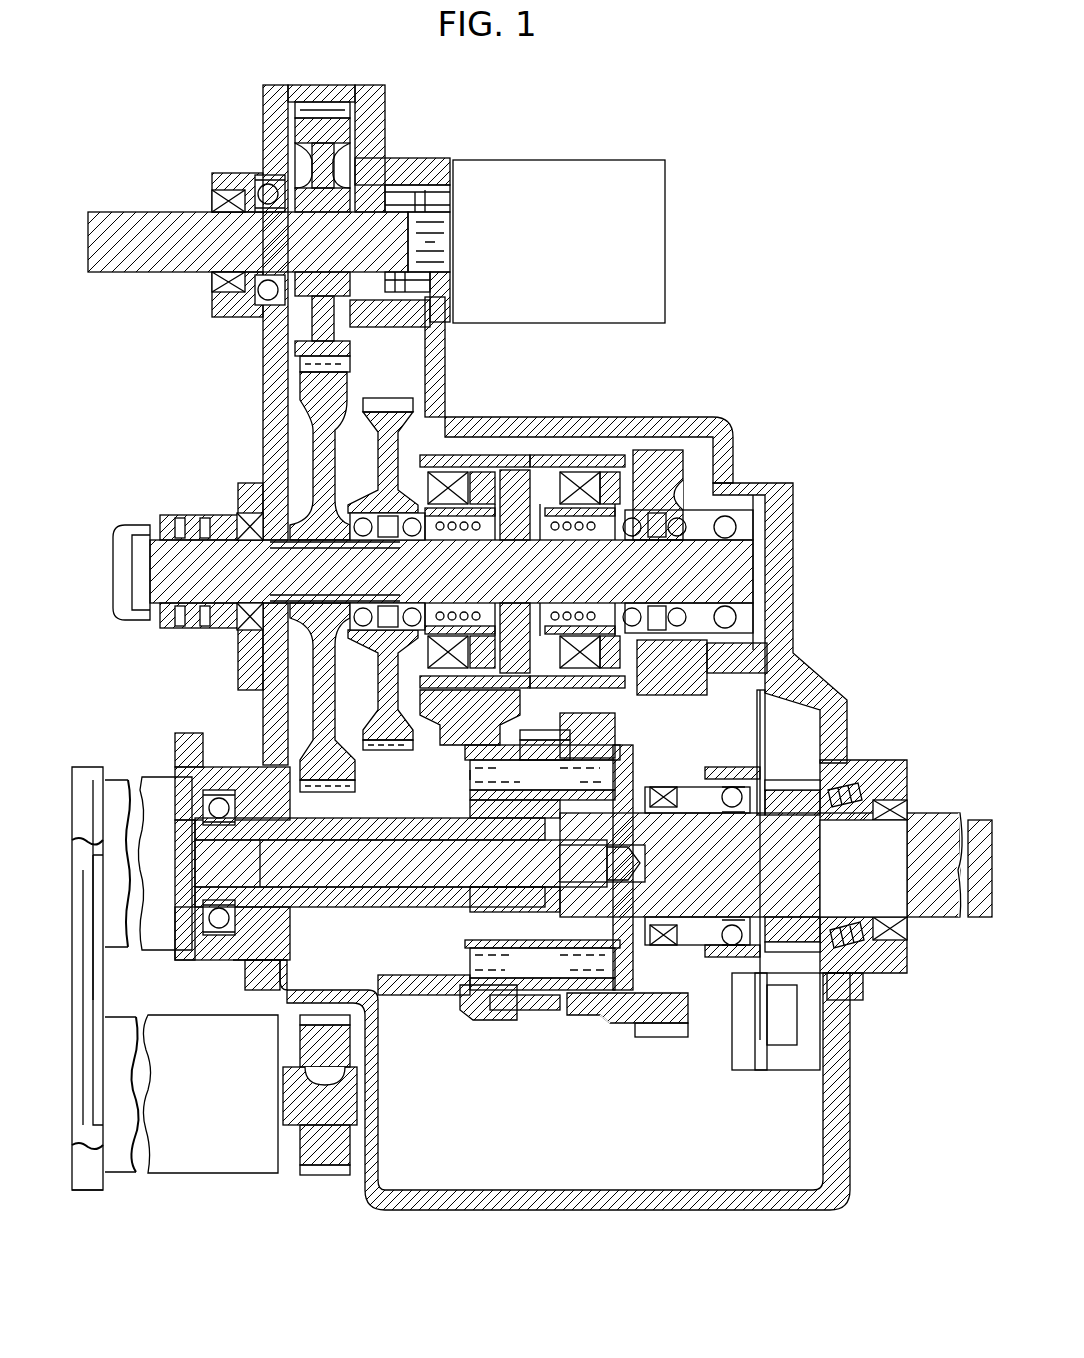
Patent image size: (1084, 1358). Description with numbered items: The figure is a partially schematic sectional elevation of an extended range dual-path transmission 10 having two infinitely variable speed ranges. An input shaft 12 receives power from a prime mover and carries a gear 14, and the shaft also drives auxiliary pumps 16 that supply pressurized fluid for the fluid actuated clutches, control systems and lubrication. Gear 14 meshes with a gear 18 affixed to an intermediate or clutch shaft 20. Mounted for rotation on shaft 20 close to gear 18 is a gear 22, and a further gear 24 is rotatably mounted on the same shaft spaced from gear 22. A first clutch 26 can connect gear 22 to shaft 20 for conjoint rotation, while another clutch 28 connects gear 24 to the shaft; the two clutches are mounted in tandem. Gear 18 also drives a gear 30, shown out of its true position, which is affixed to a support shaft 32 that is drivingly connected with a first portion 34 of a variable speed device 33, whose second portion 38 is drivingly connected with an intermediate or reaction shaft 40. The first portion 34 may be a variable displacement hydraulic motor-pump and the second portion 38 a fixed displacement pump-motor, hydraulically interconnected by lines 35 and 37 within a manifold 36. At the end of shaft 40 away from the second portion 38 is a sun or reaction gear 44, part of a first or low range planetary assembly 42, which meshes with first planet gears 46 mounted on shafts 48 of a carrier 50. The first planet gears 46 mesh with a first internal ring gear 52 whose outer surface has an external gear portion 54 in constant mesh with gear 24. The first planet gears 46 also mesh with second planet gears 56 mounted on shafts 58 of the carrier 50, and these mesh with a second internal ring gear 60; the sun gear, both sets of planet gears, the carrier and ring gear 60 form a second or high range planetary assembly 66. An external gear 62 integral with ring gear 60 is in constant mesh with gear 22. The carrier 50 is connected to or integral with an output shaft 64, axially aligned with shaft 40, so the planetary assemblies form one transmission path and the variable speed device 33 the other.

The dual-path transmission 10 is at (520, 115).
The input shaft 12 is at (175, 262).
The gear 14 is at (340, 120).
The auxiliary pumps 16 is at (630, 175).
The gear 18 is at (300, 378).
The intermediate or clutch shaft 20 is at (178, 545).
The gear 22 is at (388, 400).
The gear 24 is at (665, 462).
The first clutch 26 is at (455, 462).
The clutch 28 is at (575, 462).
The gear 30 is at (325, 1172).
The support shaft 32 is at (300, 1095).
The variable speed device 33 is at (85, 760).
The first portion 34 is at (208, 1160).
The line 35 is at (100, 993).
The manifold 36 is at (90, 1185).
The line 37 is at (95, 900).
The second portion 38 is at (158, 780).
The intermediate or reaction shaft 40 is at (355, 878).
The first or low range planetary assembly 42 is at (595, 1020).
The sun or reaction gear 44 is at (525, 888).
The first planet gears 46 is at (545, 732).
The shafts 48 is at (552, 786).
The carrier 50 is at (520, 774).
The first internal ring gear 52 is at (588, 732).
The external gear portion 54 is at (665, 1032).
The second planet gears 56 is at (548, 1005).
The shafts 58 is at (512, 962).
The second internal ring gear 60 is at (478, 715).
The external gear 62 is at (388, 990).
The output shaft 64 is at (935, 825).
The second or high range planetary assembly 66 is at (480, 1012).